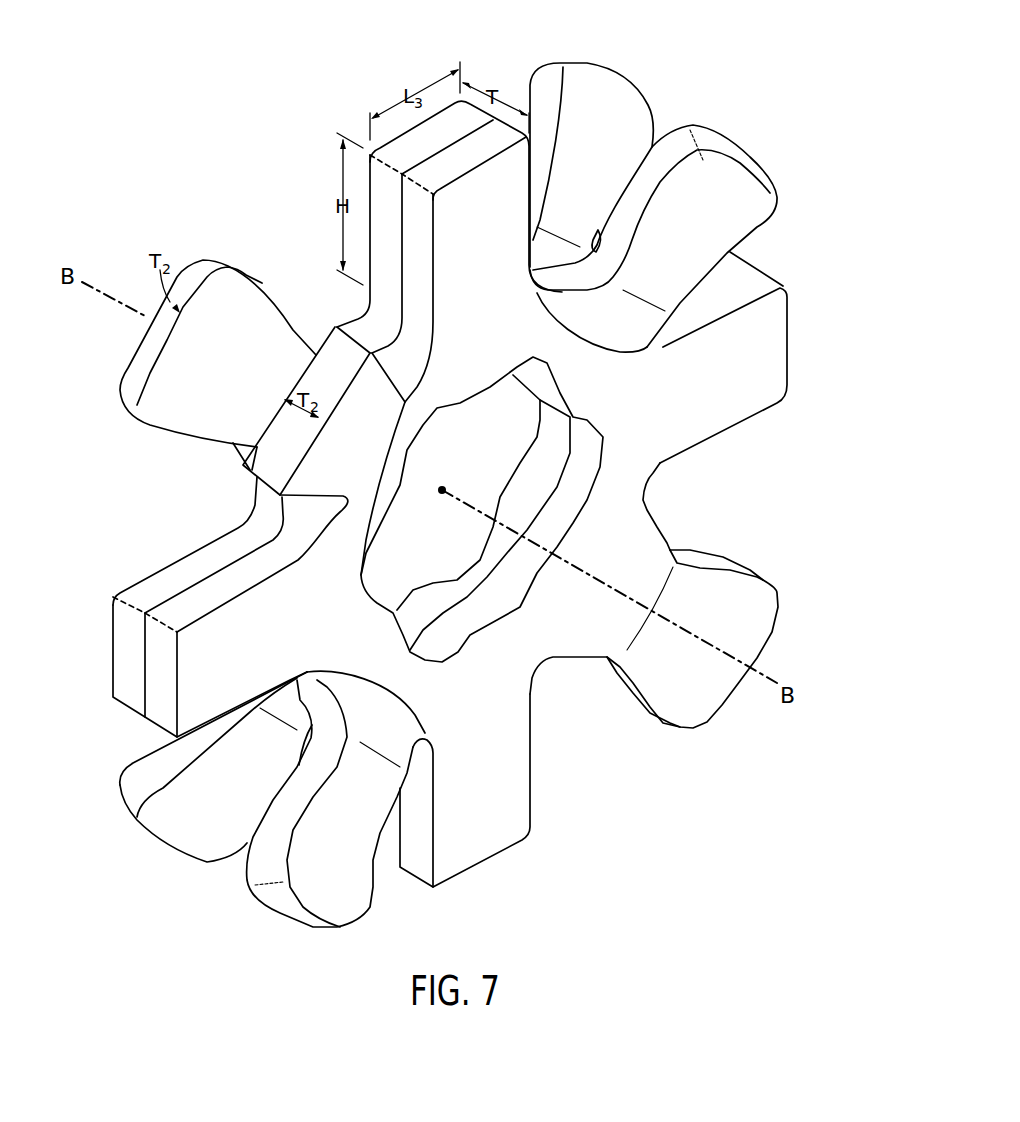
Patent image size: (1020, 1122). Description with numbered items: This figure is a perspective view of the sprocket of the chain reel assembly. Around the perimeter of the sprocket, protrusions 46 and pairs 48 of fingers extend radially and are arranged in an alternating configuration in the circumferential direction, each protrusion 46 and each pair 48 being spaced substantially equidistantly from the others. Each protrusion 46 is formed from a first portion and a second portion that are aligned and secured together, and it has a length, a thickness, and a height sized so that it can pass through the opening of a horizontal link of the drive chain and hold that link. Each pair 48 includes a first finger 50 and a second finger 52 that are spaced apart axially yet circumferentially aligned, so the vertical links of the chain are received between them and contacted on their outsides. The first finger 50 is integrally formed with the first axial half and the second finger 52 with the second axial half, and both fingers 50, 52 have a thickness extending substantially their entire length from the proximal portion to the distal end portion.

The protrusion 46 is at (110, 620).
The pair of fingers 48 is at (782, 160).
The first finger 50 is at (745, 218).
The second finger 52 is at (547, 73).